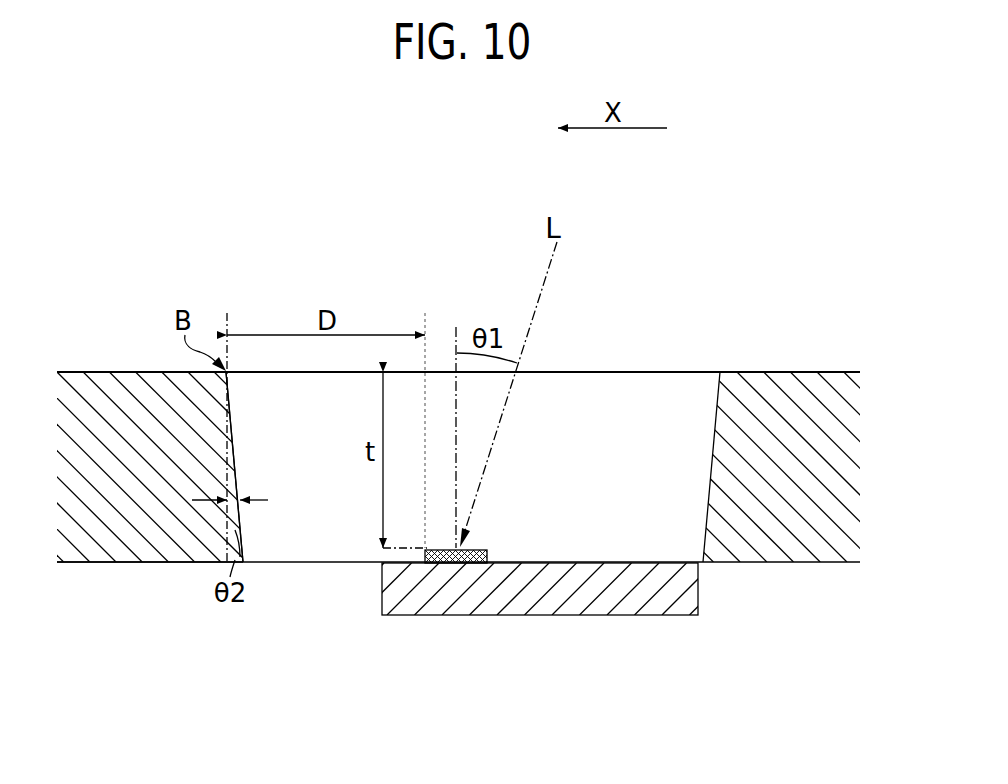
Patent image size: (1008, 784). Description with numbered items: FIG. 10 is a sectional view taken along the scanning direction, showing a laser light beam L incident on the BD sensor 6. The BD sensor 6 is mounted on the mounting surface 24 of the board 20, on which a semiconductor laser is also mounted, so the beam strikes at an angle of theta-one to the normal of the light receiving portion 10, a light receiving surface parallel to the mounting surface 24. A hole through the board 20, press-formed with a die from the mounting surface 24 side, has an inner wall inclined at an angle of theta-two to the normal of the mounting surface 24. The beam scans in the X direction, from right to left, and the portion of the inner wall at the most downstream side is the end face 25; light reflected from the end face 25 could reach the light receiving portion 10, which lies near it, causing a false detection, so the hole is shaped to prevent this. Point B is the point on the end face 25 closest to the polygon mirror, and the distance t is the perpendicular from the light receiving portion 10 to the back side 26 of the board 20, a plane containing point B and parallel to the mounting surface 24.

The BD sensor 6 is at (626, 607).
The light receiving portion 10 is at (483, 549).
The board 20 is at (782, 381).
The mounting surface 24 is at (143, 563).
The end face 25 is at (243, 518).
The back side 26 is at (120, 372).